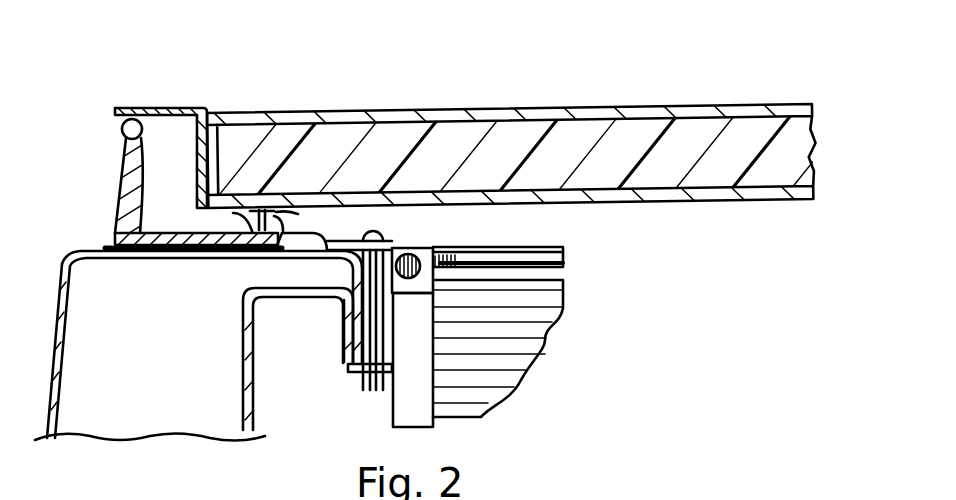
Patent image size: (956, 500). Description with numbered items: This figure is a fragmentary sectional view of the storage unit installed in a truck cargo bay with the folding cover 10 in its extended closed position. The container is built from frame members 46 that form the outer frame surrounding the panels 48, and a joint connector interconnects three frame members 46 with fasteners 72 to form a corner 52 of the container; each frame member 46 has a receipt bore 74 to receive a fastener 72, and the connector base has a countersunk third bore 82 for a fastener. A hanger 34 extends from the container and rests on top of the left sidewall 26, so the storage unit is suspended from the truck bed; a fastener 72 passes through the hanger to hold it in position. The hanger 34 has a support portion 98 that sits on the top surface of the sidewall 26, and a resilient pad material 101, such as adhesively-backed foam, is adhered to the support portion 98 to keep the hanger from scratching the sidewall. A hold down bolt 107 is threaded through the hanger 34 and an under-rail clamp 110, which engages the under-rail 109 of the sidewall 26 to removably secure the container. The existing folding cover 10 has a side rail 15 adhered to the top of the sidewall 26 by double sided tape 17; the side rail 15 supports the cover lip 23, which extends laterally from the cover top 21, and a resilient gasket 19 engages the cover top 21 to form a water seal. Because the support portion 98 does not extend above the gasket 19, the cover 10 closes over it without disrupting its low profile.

The folding cover 10 is at (490, 77).
The side rail 15 is at (128, 168).
The double sided tape 17 is at (112, 248).
The resilient gasket 19 is at (295, 209).
The cover top 21 is at (352, 110).
The cover lip 23 is at (149, 107).
The left sidewall 26 is at (47, 410).
The hanger 34 is at (345, 248).
The frame member 46 is at (532, 246).
The panel 48 is at (513, 327).
The corner 52 is at (423, 294).
The fastener 72 is at (390, 254).
The receipt bore 74 is at (563, 263).
The third bore 82 is at (426, 247).
The support portion 98 is at (278, 247).
The resilient pad material 101 is at (347, 256).
The hold down bolt 107 is at (375, 236).
The under-rail 109 is at (350, 325).
The under-rail clamp 110 is at (357, 375).